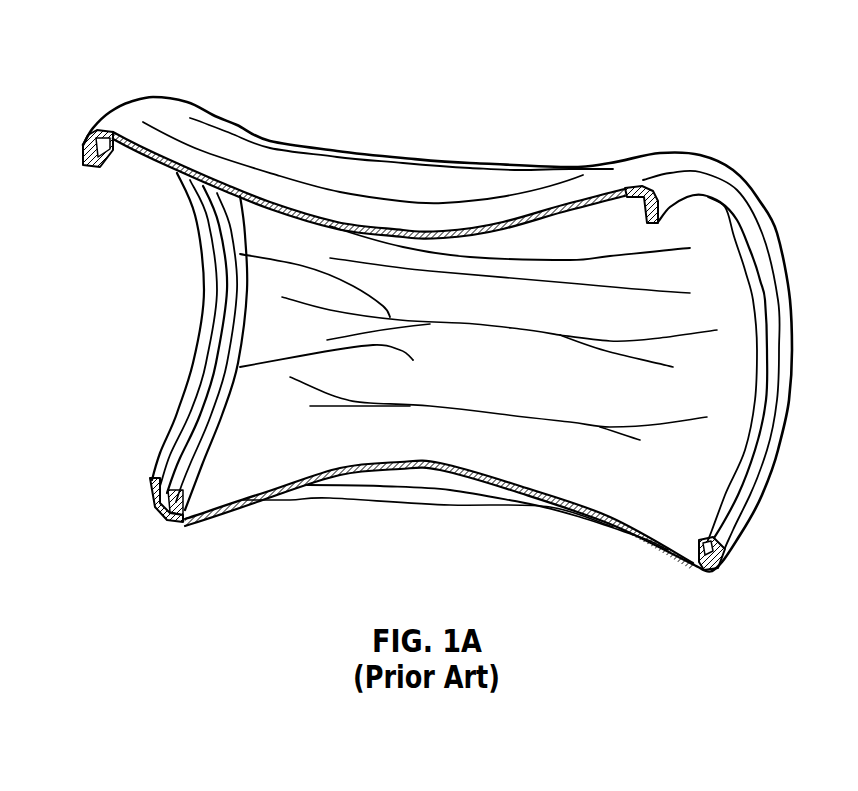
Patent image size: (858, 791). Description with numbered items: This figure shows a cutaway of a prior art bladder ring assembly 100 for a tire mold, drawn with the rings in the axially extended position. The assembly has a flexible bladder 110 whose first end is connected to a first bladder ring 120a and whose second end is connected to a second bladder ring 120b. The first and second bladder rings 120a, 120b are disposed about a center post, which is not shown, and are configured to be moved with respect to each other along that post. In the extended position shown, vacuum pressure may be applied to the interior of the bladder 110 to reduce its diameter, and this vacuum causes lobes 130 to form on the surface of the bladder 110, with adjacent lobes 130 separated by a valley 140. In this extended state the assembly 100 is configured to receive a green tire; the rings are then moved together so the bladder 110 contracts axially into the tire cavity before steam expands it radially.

The bladder ring assembly 100 is at (647, 104).
The flexible bladder 110 is at (346, 150).
The first bladder ring 120a is at (192, 468).
The second bladder ring 120b is at (723, 517).
The lobes 130 is at (240, 254).
The valley 140 is at (240, 367).